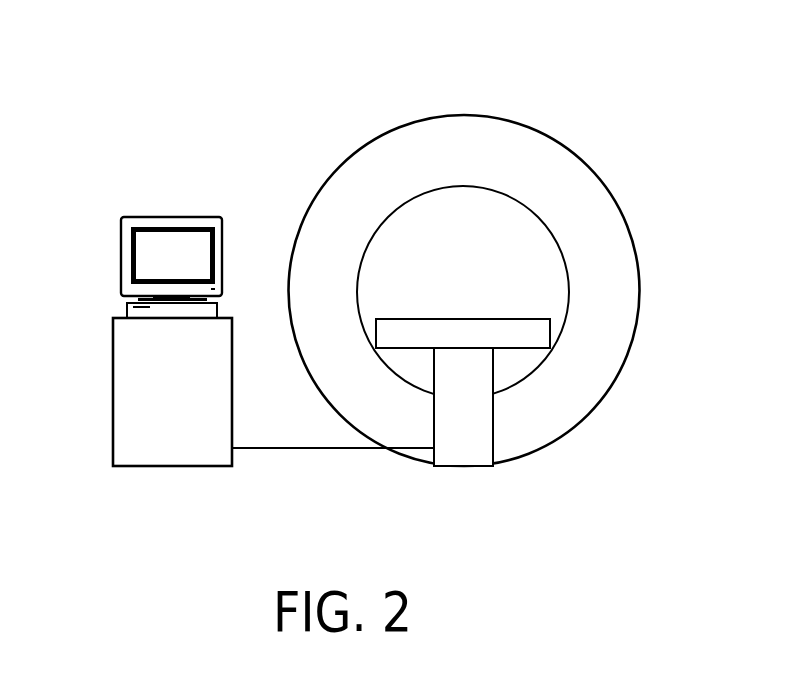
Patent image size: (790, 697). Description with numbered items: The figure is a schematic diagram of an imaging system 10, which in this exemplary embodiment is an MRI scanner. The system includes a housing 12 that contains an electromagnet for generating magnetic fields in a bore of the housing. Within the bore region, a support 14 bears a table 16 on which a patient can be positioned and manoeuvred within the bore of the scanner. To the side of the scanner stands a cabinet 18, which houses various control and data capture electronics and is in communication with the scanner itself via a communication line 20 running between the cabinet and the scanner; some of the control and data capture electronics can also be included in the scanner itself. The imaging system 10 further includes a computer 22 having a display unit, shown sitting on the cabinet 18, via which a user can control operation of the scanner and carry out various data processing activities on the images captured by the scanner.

The imaging system 10 is at (567, 80).
The housing 12 is at (592, 166).
The support 14 is at (494, 408).
The table 16 is at (460, 319).
The cabinet 18 is at (113, 397).
The communication line 20 is at (303, 450).
The computer 22 is at (121, 258).